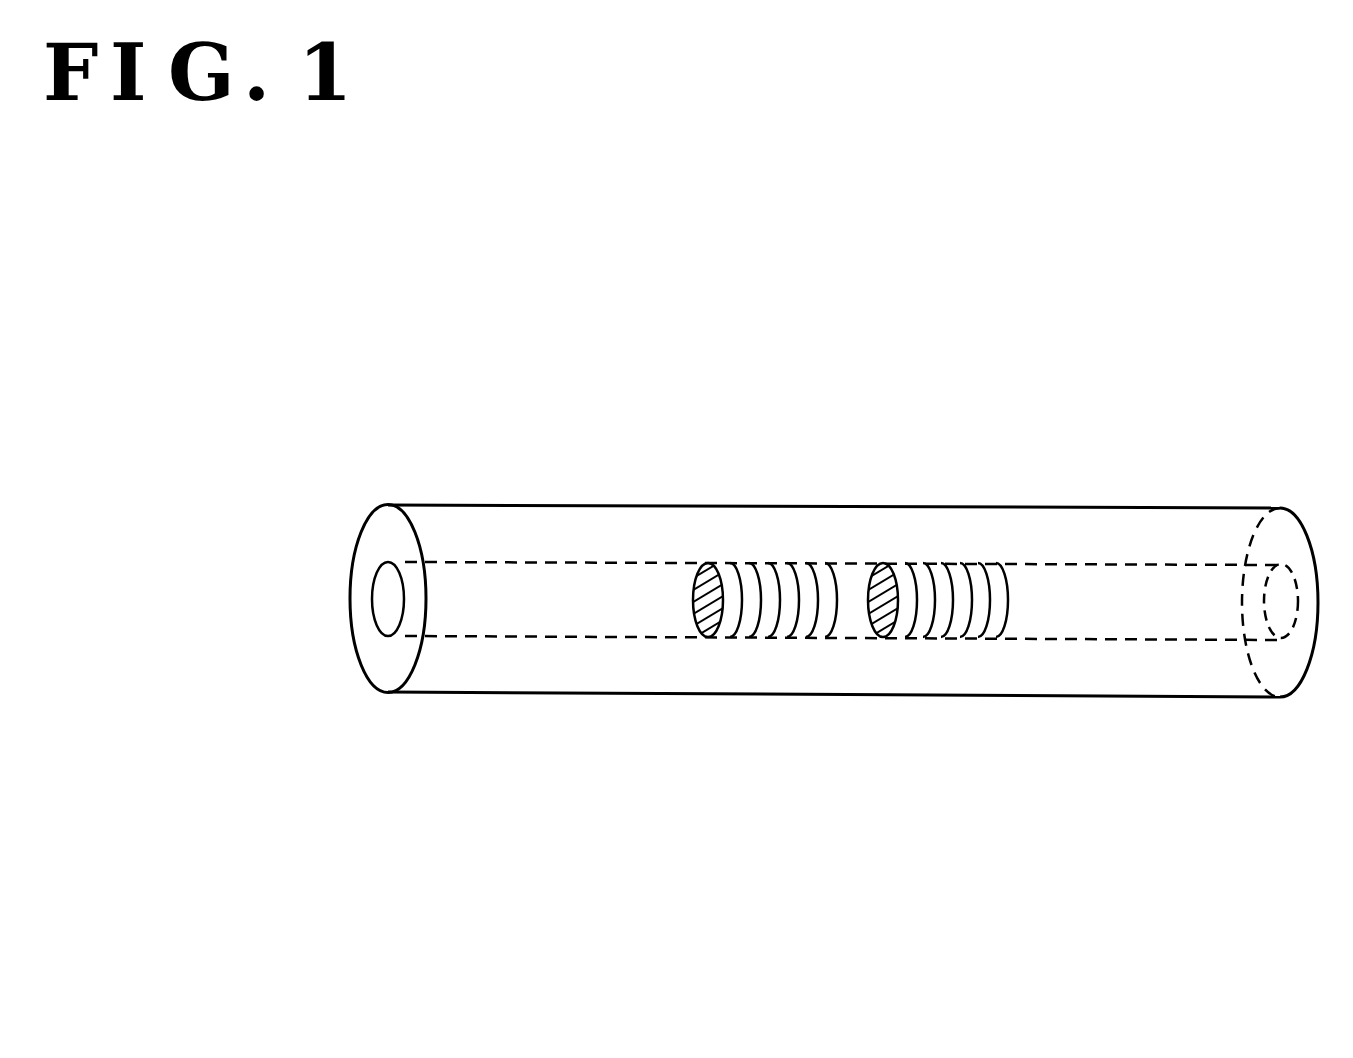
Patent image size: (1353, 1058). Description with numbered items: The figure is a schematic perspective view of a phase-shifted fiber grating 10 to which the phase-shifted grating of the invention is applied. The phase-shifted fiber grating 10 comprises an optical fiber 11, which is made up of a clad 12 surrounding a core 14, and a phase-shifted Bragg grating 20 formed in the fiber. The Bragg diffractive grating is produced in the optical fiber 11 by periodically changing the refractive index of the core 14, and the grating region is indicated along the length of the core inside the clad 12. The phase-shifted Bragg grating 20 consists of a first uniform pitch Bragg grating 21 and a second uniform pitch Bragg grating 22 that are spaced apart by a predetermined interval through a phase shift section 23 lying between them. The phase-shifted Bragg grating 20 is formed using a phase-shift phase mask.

The phase-shifted fiber grating 10 is at (1125, 394).
The optical fiber 11 is at (506, 505).
The clad 12 is at (363, 526).
The core 14 is at (349, 598).
The phase-shifted Bragg grating 20 is at (1018, 490).
The first uniform pitch Bragg grating 21 is at (833, 713).
The second uniform pitch Bragg grating 22 is at (1018, 713).
The phase shift section 23 is at (852, 730).